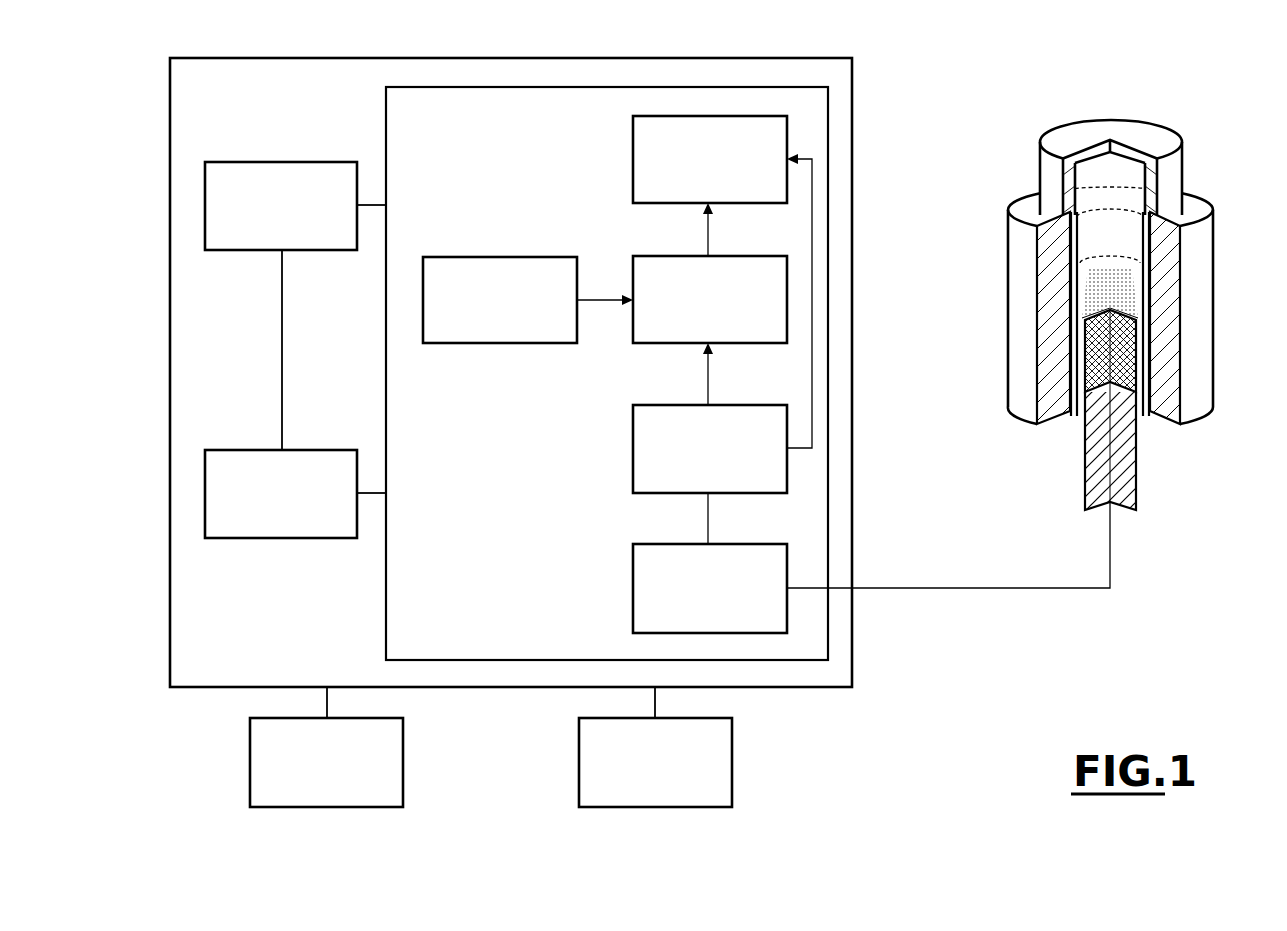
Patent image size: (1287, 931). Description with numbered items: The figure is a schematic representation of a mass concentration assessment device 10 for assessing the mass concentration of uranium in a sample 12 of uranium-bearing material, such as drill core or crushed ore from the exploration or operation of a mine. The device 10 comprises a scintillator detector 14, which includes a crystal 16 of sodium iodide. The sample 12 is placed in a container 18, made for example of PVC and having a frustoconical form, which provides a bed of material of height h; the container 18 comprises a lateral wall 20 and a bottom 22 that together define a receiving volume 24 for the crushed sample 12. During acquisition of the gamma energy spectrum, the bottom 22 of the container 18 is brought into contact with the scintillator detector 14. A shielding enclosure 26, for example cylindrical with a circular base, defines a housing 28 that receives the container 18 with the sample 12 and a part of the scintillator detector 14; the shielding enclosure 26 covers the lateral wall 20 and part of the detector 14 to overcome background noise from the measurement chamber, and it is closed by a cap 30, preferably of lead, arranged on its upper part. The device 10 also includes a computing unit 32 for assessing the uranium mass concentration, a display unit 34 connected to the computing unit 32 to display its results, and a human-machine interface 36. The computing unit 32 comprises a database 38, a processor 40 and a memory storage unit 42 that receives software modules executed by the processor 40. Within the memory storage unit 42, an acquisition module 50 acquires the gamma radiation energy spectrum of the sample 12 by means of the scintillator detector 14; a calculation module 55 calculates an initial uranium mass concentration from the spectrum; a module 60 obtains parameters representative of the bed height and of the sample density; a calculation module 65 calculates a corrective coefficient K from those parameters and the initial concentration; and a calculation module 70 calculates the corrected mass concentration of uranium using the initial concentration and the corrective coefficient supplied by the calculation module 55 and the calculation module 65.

The mass concentration assessment device 10 is at (921, 60).
The sample 12 is at (1040, 308).
The scintillator detector 14 is at (1126, 452).
The crystal 16 is at (1136, 360).
The container 18 is at (1112, 235).
The lateral wall 20 is at (1192, 208).
The bottom 22 is at (1072, 347).
The receiving volume 24 is at (1113, 252).
The shielding enclosure 26 is at (1008, 243).
The housing 28 is at (1143, 307).
The cap 30 is at (1148, 130).
The computing unit 32 is at (853, 115).
The display unit 34 is at (404, 763).
The human-machine interface 36 is at (733, 763).
The database 38 is at (282, 162).
The processor 40 is at (282, 538).
The memory storage unit 42 is at (717, 87).
The acquisition module 50 is at (871, 563).
The calculation module 55 is at (722, 323).
The module for obtaining a measurement 60 is at (528, 300).
The calculation module 65 is at (710, 273).
The calculation module 70 is at (710, 159).